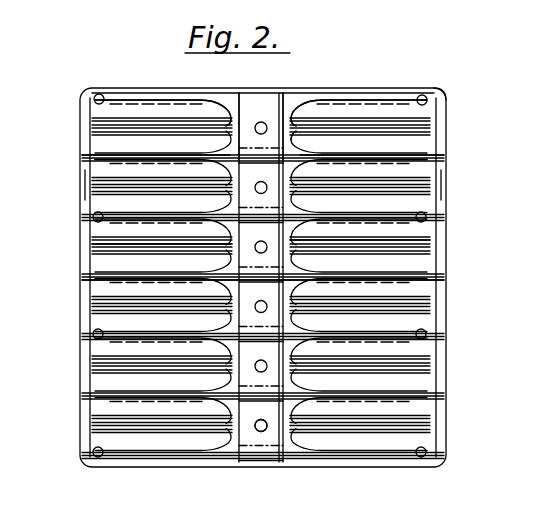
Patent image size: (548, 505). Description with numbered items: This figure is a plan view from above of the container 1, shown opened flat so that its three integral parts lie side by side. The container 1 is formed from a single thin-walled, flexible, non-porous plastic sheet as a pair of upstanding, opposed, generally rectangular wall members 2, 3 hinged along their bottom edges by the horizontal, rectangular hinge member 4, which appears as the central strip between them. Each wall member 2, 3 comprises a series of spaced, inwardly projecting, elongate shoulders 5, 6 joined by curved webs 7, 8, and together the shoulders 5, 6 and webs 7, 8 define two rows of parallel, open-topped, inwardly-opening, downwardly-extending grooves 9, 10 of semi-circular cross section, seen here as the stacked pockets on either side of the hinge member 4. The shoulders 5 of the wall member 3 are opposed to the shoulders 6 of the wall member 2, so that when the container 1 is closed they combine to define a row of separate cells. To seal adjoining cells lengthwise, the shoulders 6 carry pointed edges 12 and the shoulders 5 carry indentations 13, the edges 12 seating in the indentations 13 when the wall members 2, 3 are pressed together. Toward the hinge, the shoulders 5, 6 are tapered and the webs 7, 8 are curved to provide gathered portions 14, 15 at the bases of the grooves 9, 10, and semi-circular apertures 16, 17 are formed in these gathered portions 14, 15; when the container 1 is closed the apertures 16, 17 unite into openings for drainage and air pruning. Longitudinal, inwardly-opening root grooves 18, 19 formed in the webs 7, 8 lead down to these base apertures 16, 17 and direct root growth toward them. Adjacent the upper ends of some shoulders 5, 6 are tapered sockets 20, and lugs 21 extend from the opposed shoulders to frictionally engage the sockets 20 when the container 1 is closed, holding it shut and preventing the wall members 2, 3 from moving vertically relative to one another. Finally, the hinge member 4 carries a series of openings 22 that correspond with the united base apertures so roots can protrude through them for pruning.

The container 1 is at (382, 64).
The wall member 2 is at (442, 125).
The wall member 3 is at (168, 92).
The hinge member 4 is at (263, 462).
The shoulders 5 is at (80, 92).
The shoulders 6 is at (440, 90).
The curved webs 7 is at (83, 182).
The curved webs 8 is at (441, 182).
The grooves 9 is at (100, 200).
The grooves 10 is at (417, 203).
The pointed edges 12 is at (439, 155).
The indentations 13 is at (88, 148).
The gathered portion 14 is at (215, 104).
The gathered portion 15 is at (306, 107).
The semi-circular aperture 16 is at (266, 74).
The semi-circular aperture 17 is at (288, 113).
The root groove 18 is at (103, 247).
The root groove 19 is at (421, 240).
The tapered sockets 20 is at (100, 93).
The lugs 21 is at (426, 100).
The openings 22 is at (257, 430).